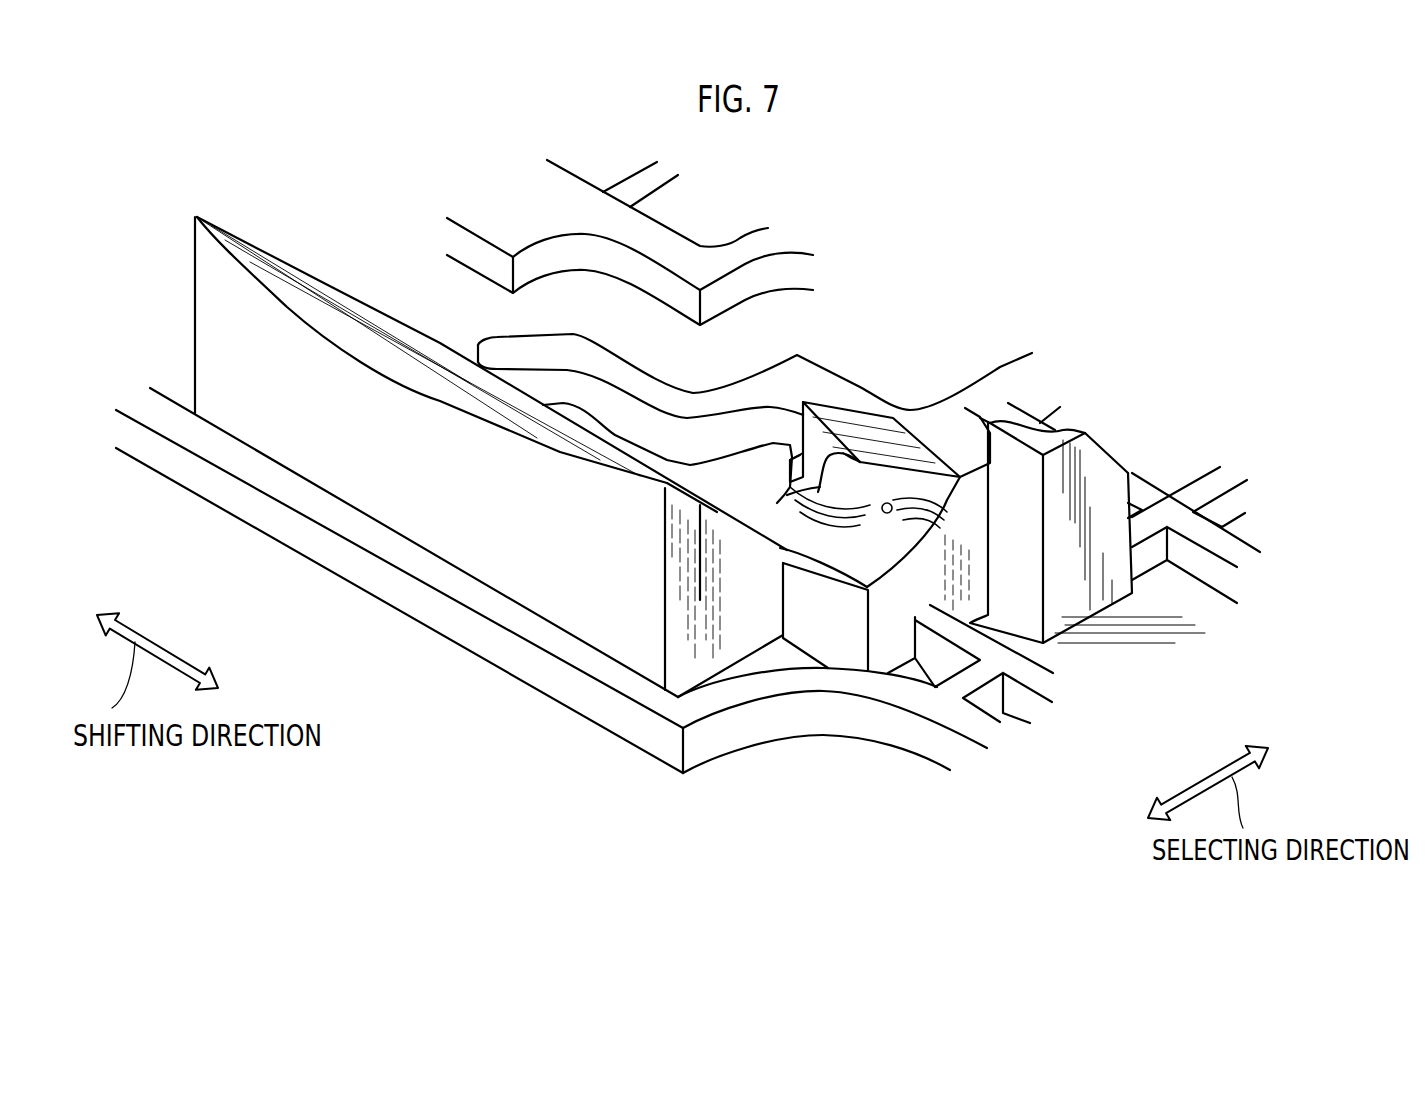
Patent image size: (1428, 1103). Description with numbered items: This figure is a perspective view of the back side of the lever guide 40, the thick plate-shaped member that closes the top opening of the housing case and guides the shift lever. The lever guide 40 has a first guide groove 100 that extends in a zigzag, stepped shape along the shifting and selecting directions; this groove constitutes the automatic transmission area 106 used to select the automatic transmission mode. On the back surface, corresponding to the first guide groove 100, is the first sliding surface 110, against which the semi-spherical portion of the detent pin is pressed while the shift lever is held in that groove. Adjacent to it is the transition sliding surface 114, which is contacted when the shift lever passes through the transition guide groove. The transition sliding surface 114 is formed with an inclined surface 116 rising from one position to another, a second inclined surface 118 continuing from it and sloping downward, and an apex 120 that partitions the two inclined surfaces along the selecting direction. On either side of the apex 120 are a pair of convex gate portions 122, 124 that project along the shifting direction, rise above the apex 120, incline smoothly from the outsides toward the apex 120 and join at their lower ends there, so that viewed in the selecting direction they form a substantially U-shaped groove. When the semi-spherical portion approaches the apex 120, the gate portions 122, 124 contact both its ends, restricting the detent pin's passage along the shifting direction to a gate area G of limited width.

The lever guide 40 is at (478, 724).
The first guide groove 100 is at (552, 265).
The automatic transmission area 106 is at (465, 318).
The first sliding surface 110 is at (370, 325).
The transition sliding surface 114 is at (880, 445).
The inclined surface 116 is at (880, 552).
The inclined surface 118 is at (915, 493).
The apex 120 is at (885, 500).
The gate portion 122 is at (843, 453).
The gate portion 124 is at (940, 433).
The gate area G is at (883, 515).